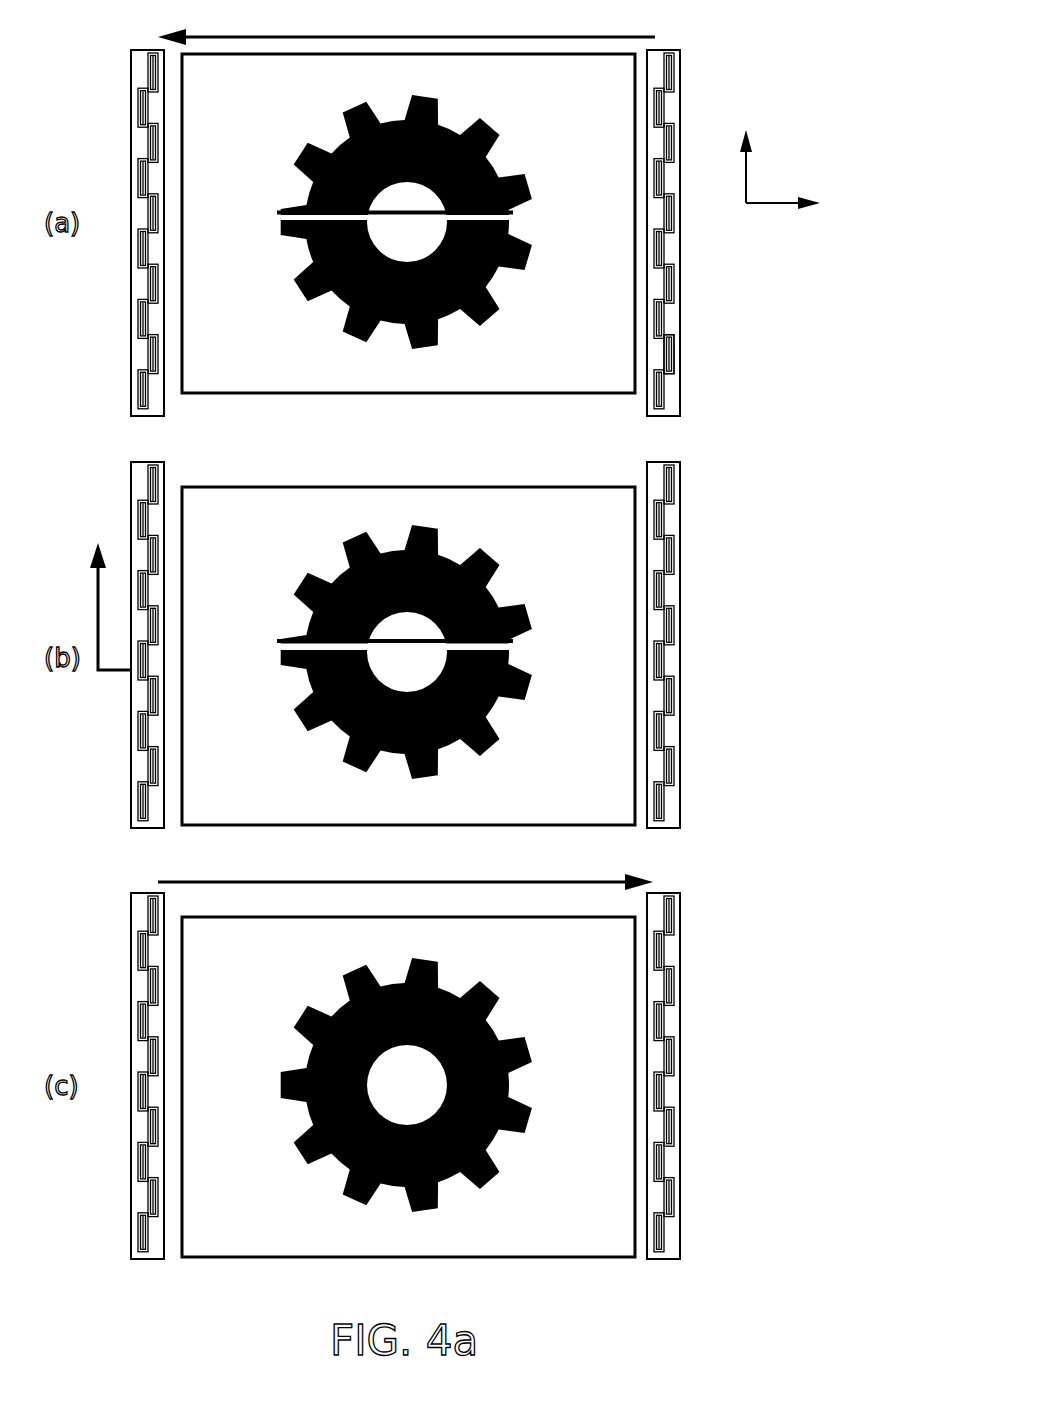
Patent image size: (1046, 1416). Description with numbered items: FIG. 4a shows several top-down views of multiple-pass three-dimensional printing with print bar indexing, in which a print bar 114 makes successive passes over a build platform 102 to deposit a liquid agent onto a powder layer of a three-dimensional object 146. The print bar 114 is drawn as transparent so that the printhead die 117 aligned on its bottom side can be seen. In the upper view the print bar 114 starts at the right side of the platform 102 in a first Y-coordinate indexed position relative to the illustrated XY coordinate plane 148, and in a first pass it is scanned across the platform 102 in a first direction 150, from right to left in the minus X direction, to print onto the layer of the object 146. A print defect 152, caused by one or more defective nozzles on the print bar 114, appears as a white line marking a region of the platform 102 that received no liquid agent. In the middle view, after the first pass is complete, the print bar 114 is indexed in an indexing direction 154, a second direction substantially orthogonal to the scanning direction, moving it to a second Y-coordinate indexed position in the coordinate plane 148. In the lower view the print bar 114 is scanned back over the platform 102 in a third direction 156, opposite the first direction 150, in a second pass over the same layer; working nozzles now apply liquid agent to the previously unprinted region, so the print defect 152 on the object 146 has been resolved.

The build platform 102 is at (278, 394).
The print bar 114 is at (682, 64).
The printhead die 117 is at (676, 345).
The 3D object 146 is at (493, 126).
The XY coordinate plane 148 is at (797, 142).
The first direction 150 is at (535, 36).
The print defect 152 is at (288, 212).
The indexing direction 154 is at (96, 590).
The third direction 156 is at (497, 880).